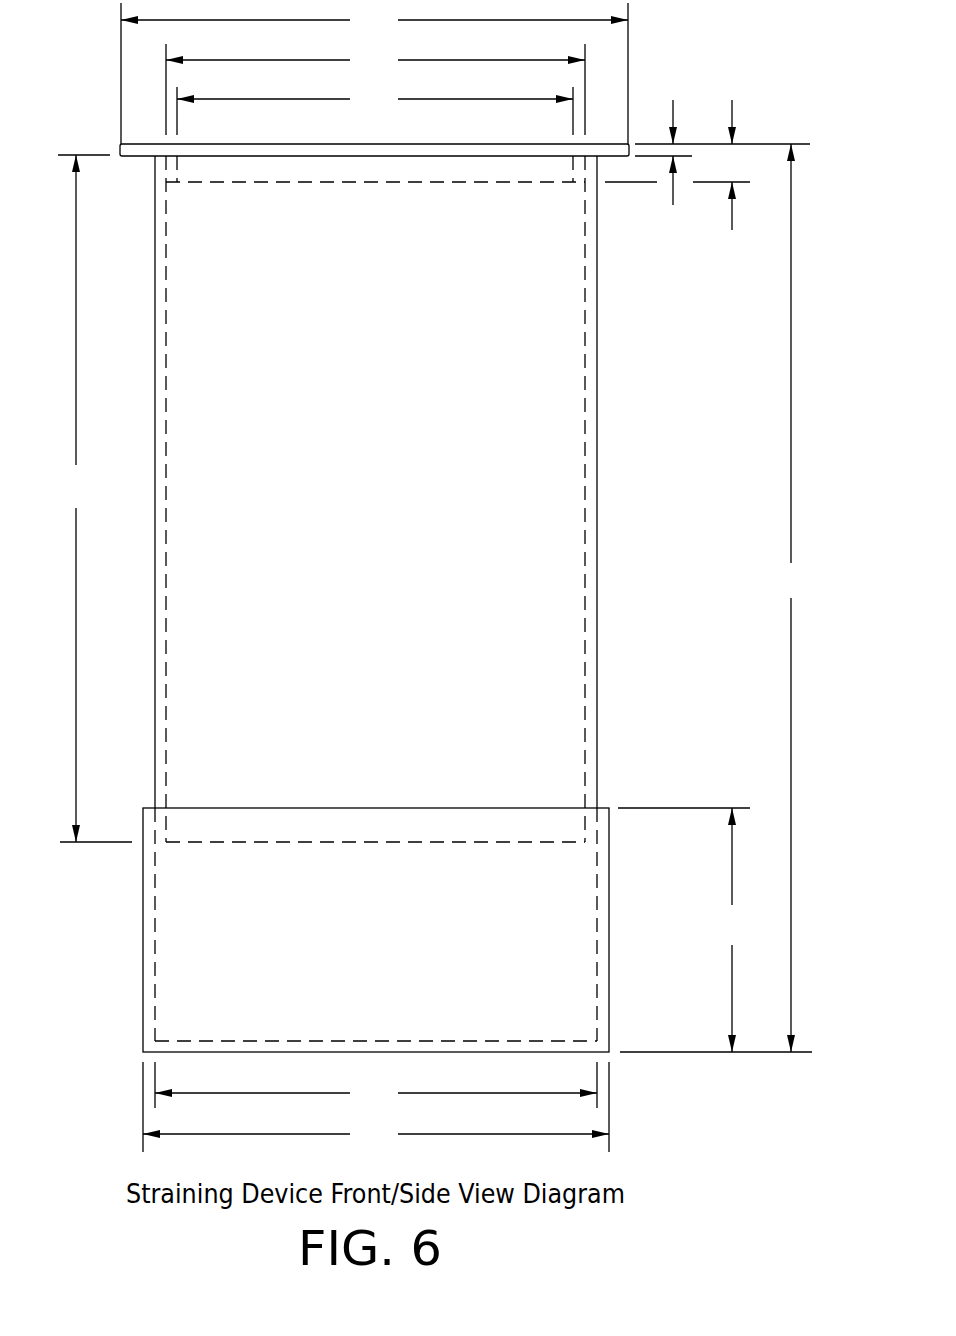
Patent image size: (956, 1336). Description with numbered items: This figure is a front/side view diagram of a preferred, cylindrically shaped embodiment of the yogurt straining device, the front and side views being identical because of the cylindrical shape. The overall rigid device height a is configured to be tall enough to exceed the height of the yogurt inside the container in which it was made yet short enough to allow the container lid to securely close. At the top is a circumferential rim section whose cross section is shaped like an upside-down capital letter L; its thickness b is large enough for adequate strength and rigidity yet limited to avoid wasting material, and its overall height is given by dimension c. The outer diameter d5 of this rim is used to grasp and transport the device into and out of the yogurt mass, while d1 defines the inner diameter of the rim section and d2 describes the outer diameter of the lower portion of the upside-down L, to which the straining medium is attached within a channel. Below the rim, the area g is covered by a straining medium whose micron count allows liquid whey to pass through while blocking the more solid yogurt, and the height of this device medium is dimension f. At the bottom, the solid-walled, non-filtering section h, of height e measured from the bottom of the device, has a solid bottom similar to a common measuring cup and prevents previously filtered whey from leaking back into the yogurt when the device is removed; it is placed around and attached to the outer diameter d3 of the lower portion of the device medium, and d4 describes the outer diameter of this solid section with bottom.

The inner diameter of top circumferential rim section d1 is at (375, 110).
The outer diameter of lower portion of upside-down L d2 is at (375, 89).
The outer diameter of lower portion of device medium d3 is at (376, 1085).
The outer diameter of solid section with bottom d4 is at (376, 1107).
The outer diameter of rim section d5 is at (374, 73).
The overall rigid device height dimension a is at (716, 598).
The thickness of top circumferential rim section b is at (663, 165).
The overall height of top circumferential rim section c is at (677, 177).
The height of solid-walled non-filtering section e is at (684, 930).
The height of device medium f is at (95, 498).
The area covered by straining medium g is at (376, 499).
The solid-walled non-filtering section h is at (376, 930).